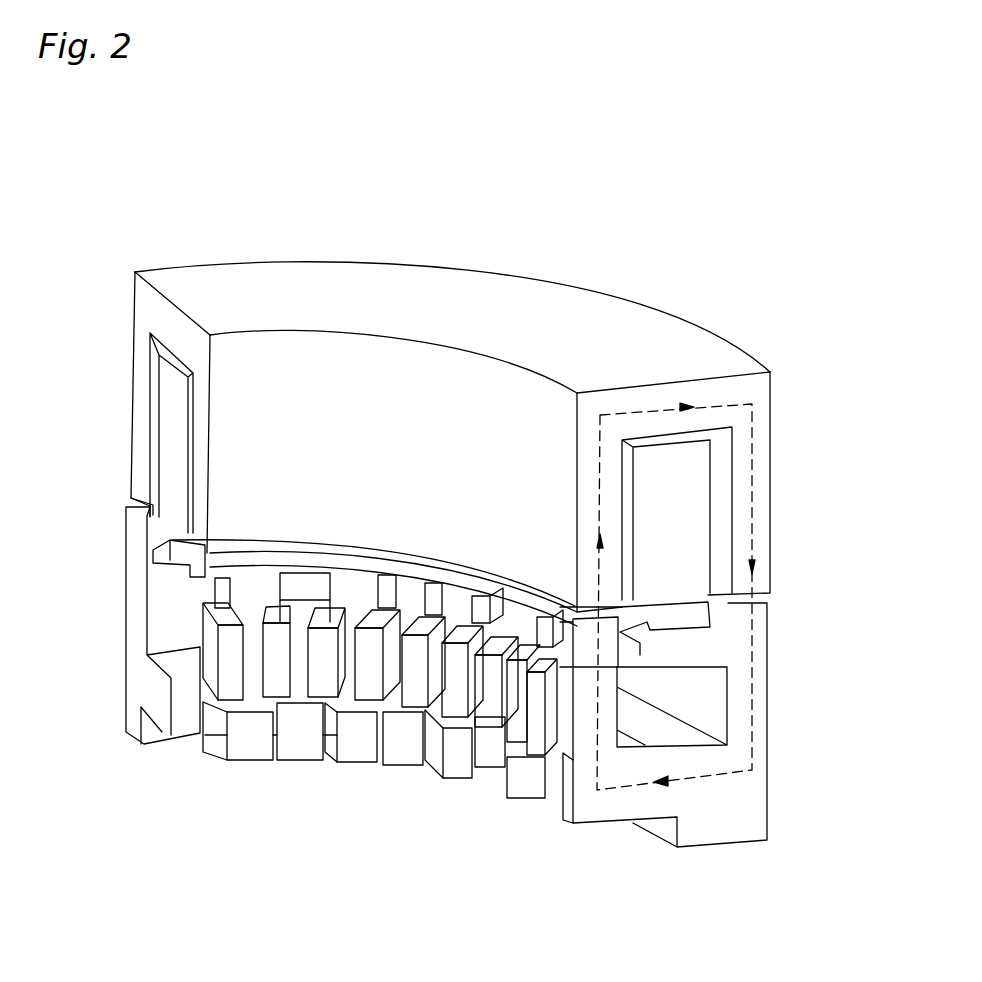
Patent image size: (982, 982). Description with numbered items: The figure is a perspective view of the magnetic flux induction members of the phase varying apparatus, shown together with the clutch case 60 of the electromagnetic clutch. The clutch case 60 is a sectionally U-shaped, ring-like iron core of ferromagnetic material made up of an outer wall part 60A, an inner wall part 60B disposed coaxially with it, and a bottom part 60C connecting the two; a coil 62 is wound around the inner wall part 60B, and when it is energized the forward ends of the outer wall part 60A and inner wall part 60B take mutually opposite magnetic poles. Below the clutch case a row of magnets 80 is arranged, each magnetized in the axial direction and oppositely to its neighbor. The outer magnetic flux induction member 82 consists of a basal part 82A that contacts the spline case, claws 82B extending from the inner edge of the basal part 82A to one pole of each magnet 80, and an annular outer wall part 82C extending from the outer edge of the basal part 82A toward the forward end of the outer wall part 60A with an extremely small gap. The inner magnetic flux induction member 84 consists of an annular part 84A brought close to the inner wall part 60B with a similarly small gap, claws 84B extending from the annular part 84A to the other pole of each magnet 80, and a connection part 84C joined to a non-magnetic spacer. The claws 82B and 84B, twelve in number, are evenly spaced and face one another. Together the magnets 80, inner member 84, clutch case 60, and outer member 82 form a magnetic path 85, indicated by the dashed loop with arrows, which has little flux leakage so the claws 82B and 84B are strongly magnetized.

The clutch case 60 is at (494, 386).
The outer wall part 60A is at (717, 408).
The inner wall part 60B is at (577, 478).
The bottom part 60C is at (627, 343).
The coil 62 is at (690, 510).
The magnetic path 85 is at (752, 470).
The magnet 80 is at (313, 700).
The outer magnetic flux induction member 82 is at (496, 754).
The basal part 82A is at (717, 850).
The claw 82B is at (396, 732).
The annular outer wall part 82C is at (768, 680).
The inner magnetic flux induction member 84 is at (161, 692).
The annular part 84A is at (252, 558).
The claw 84B is at (205, 600).
The connection part 84C is at (215, 578).